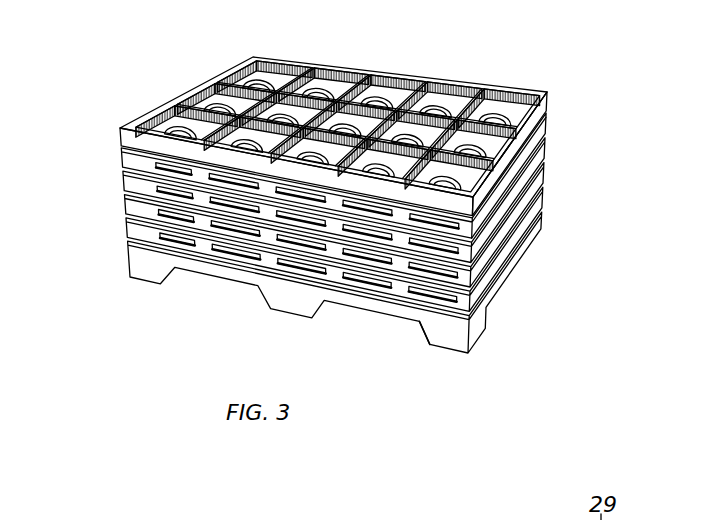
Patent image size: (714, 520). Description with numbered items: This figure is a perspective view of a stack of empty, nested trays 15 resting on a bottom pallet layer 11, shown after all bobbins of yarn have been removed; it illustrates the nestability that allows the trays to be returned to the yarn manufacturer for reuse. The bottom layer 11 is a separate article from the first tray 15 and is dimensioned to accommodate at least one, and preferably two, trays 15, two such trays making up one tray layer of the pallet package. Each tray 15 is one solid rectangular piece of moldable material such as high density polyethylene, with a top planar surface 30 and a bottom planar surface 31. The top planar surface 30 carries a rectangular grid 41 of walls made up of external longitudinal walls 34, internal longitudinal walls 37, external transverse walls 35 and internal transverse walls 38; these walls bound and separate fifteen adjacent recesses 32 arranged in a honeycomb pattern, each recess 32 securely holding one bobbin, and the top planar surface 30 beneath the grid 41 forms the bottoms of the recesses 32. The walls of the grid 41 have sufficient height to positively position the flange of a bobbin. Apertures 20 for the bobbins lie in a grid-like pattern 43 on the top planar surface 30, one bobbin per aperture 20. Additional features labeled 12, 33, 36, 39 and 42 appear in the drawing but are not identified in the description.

The bottom pallet layer 11 is at (498, 287).
The pallet leg 12 is at (458, 328).
The tray 15 is at (132, 205).
The aperture 20 is at (413, 193).
The top planar surface 30 is at (477, 182).
The bottom planar surface 31 is at (475, 222).
The recess 32 is at (512, 102).
The tray front wall 33 is at (512, 152).
The external longitudinal wall 34 is at (467, 214).
The external transverse wall 35 is at (530, 122).
The transverse partition 36 is at (303, 112).
The internal longitudinal wall 37 is at (408, 150).
The internal transverse wall 38 is at (270, 88).
The bottle-receiving pocket 39 is at (322, 148).
The grid 41 is at (230, 92).
The outer wall inner face 42 is at (215, 100).
The grid-like pattern of apertures 43 is at (350, 132).